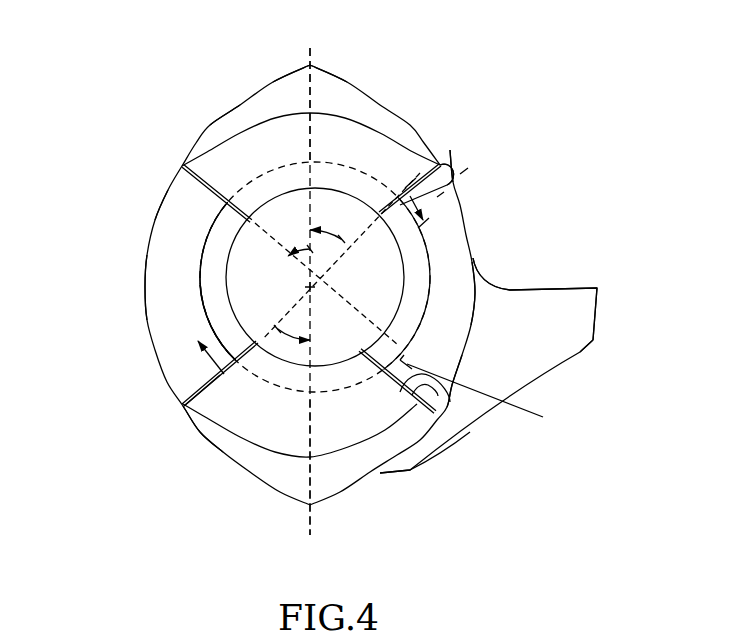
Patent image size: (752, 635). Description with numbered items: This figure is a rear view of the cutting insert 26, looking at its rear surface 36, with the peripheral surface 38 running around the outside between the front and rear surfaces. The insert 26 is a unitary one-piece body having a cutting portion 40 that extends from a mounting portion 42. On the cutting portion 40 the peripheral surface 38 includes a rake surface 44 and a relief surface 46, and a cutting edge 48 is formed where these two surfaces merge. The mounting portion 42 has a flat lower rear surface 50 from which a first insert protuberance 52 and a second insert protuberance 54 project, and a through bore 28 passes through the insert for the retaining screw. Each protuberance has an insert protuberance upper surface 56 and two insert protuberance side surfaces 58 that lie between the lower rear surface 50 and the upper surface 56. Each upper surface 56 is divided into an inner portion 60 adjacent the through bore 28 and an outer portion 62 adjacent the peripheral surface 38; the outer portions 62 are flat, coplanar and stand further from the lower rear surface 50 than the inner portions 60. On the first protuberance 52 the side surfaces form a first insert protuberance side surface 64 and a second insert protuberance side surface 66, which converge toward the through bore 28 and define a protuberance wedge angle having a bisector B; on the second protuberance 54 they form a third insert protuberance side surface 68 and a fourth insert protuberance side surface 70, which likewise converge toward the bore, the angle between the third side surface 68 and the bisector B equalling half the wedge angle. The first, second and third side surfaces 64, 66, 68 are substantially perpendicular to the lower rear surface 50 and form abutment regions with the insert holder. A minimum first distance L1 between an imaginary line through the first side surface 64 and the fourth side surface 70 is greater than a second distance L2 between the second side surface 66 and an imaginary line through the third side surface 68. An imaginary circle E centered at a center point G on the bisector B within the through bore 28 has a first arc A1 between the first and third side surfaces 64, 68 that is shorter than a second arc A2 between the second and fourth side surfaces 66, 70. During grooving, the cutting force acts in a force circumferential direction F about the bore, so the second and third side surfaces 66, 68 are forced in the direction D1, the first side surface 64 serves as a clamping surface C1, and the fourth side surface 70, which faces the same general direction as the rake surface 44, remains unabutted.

The cutting insert 26 is at (127, 93).
The through bore 28 is at (227, 282).
The rear surface 36 is at (160, 272).
The peripheral surface 38 is at (437, 460).
The cutting portion 40 is at (553, 362).
The mounting portion 42 is at (472, 197).
The rake surface 44 is at (567, 290).
The relief surface 46 is at (597, 315).
The cutting edge 48 is at (600, 290).
The lower rear surface 50 is at (165, 217).
The first insert protuberance 52 is at (291, 103).
The second insert protuberance 54 is at (223, 400).
The insert protuberance upper surface 56 is at (247, 122).
The insert protuberance side surfaces 58 is at (197, 165).
The inner portion 60 is at (370, 157).
The outer portion 62 is at (365, 108).
The first insert protuberance side surface 64 is at (200, 176).
The second insert protuberance side surface 66 is at (440, 167).
The third insert protuberance side surface 68 is at (192, 384).
The fourth insert protuberance side surface 70 is at (440, 410).
The first arc A1 is at (203, 315).
The second arc A2 is at (507, 290).
The bisector B is at (307, 483).
The clamping surface C1 is at (232, 204).
The force circumferential direction D1 is at (316, 276).
The imaginary circle E is at (328, 160).
The force circumferential direction F is at (623, 123).
The center point G is at (337, 291).
The first distance L1 is at (487, 394).
The second distance L2 is at (463, 182).